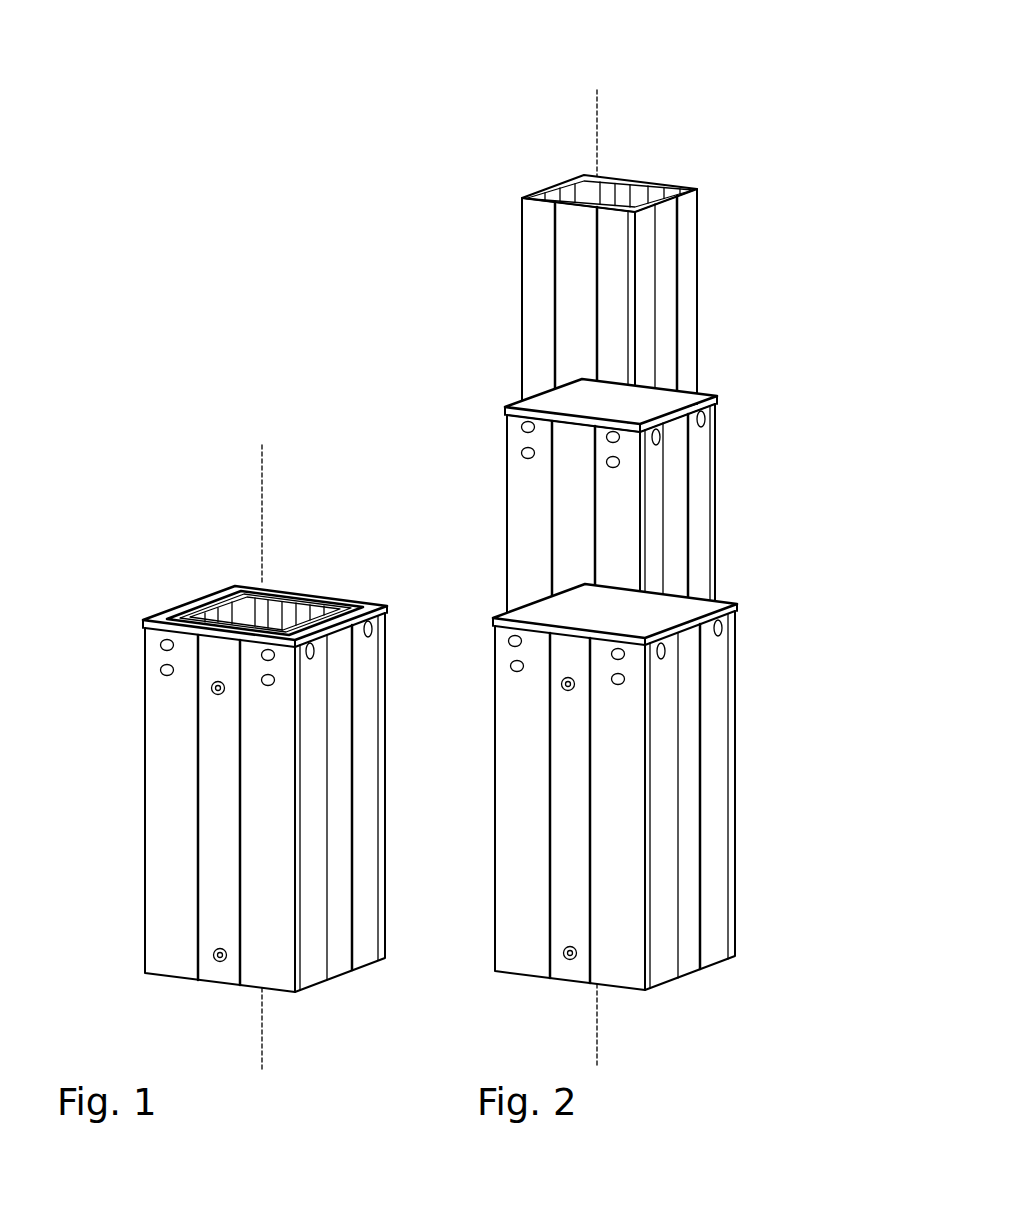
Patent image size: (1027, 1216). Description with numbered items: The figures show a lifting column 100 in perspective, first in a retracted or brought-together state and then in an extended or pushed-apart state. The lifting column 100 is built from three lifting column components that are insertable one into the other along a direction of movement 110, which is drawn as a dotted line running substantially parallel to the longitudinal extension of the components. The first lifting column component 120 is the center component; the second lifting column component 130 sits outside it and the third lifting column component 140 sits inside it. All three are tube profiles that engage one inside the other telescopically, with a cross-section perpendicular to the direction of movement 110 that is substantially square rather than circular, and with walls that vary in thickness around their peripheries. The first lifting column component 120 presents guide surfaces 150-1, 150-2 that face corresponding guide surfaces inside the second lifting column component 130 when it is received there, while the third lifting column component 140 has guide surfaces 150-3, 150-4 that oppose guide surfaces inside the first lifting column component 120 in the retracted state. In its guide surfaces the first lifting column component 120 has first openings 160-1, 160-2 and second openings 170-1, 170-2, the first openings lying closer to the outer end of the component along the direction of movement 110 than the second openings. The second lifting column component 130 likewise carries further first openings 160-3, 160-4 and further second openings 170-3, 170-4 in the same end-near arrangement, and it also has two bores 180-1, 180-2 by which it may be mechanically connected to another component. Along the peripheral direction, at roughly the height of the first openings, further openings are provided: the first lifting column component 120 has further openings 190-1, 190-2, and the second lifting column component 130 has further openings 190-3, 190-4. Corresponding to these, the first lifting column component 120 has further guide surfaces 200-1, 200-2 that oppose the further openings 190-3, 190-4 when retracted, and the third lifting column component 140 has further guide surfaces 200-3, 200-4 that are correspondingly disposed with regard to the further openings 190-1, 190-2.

In FIG. 1, the lifting column 100 is at (137, 431).
In FIG. 2, the lifting column 100 is at (754, 36).
In FIG. 1, the direction of movement 110 is at (262, 1028).
In FIG. 2, the direction of movement 110 is at (597, 1028).
In FIG. 1, the first lifting column component 120 is at (160, 614).
In FIG. 2, the first lifting column component 120 is at (505, 495).
In FIG. 1, the second lifting column component 130 is at (143, 622).
In FIG. 2, the second lifting column component 130 is at (492, 800).
In FIG. 1, the third lifting column component 140 is at (232, 584).
In FIG. 2, the third lifting column component 140 is at (519, 322).
In FIG. 2, the guide surface 150-1 is at (525, 533).
In FIG. 2, the guide surface 150-2 is at (618, 513).
In FIG. 2, the guide surface 150-3 is at (535, 352).
In FIG. 2, the guide surface 150-4 is at (617, 315).
In FIG. 2, the first opening 160-1 is at (522, 426).
In FIG. 2, the first opening 160-2 is at (620, 438).
In FIG. 1, the first opening 160-3 is at (160, 645).
In FIG. 2, the first opening 160-3 is at (509, 640).
In FIG. 1, the first opening 160-4 is at (275, 657).
In FIG. 2, the first opening 160-4 is at (625, 655).
In FIG. 2, the second opening 170-1 is at (522, 452).
In FIG. 2, the second opening 170-2 is at (620, 463).
In FIG. 1, the second opening 170-3 is at (160, 671).
In FIG. 2, the second opening 170-3 is at (511, 666).
In FIG. 1, the second opening 170-4 is at (275, 683).
In FIG. 2, the second opening 170-4 is at (625, 681).
In FIG. 1, the bore 180-1 is at (212, 691).
In FIG. 2, the bore 180-1 is at (562, 687).
In FIG. 1, the bore 180-2 is at (213, 955).
In FIG. 2, the bore 180-2 is at (563, 953).
In FIG. 2, the further opening 190-1 is at (660, 428).
In FIG. 2, the further opening 190-2 is at (704, 415).
In FIG. 1, the further opening 190-3 is at (311, 643).
In FIG. 2, the further opening 190-3 is at (663, 642).
In FIG. 1, the further opening 190-4 is at (370, 621).
In FIG. 2, the further opening 190-4 is at (720, 624).
In FIG. 2, the further guide surface 200-1 is at (653, 543).
In FIG. 2, the further guide surface 200-2 is at (698, 563).
In FIG. 2, the further guide surface 200-3 is at (650, 254).
In FIG. 2, the further guide surface 200-4 is at (692, 273).